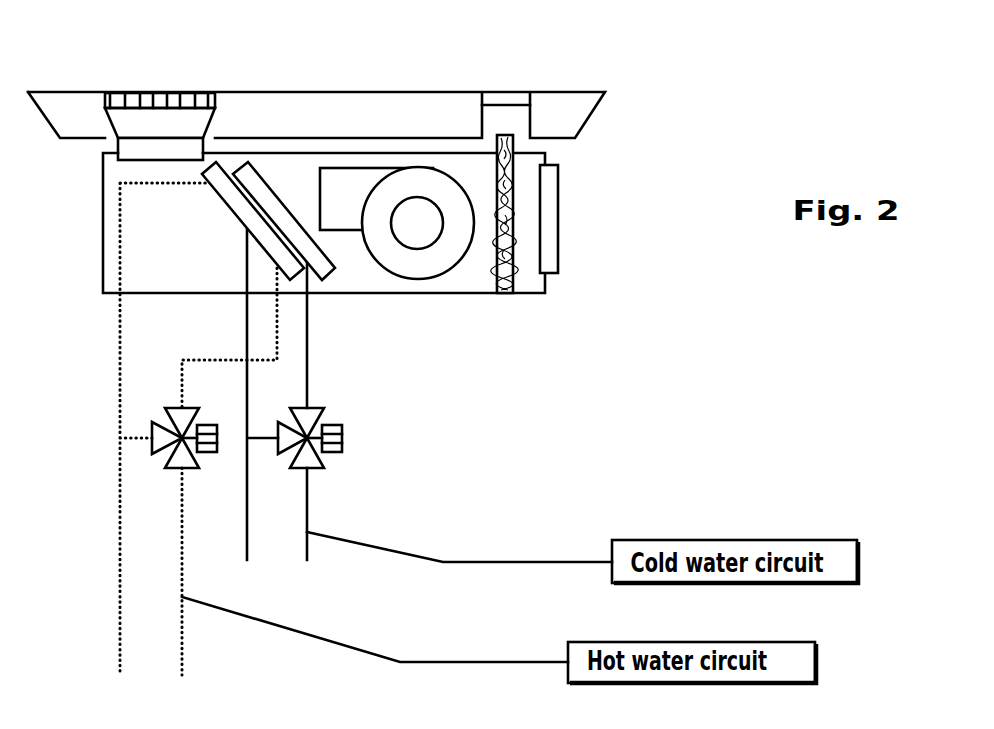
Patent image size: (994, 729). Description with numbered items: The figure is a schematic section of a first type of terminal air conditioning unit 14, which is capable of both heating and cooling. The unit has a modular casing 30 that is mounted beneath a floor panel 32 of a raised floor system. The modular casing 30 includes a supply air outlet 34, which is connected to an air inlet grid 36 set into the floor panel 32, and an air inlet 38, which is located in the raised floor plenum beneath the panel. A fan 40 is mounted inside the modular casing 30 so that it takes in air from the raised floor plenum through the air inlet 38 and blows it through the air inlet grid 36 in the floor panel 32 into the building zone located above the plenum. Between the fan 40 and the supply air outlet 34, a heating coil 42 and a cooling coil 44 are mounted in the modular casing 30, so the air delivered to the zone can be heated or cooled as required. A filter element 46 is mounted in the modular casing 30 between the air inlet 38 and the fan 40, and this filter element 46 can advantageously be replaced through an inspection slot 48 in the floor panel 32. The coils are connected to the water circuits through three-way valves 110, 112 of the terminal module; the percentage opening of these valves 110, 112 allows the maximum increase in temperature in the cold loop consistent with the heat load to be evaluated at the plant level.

The terminal air conditioning unit 14 is at (375, 346).
The modular casing 30 is at (470, 294).
The floor panel 32 is at (425, 100).
The supply air outlet 34 is at (168, 122).
The air inlet grid 36 is at (126, 100).
The air inlet 38 is at (576, 247).
The fan 40 is at (415, 268).
The heating coil 42 is at (226, 164).
The cooling coil 44 is at (265, 173).
The filter element 46 is at (515, 143).
The inspection slot 48 is at (494, 108).
The 3-way valve 110 is at (340, 473).
The 3-way valve 112 is at (146, 468).